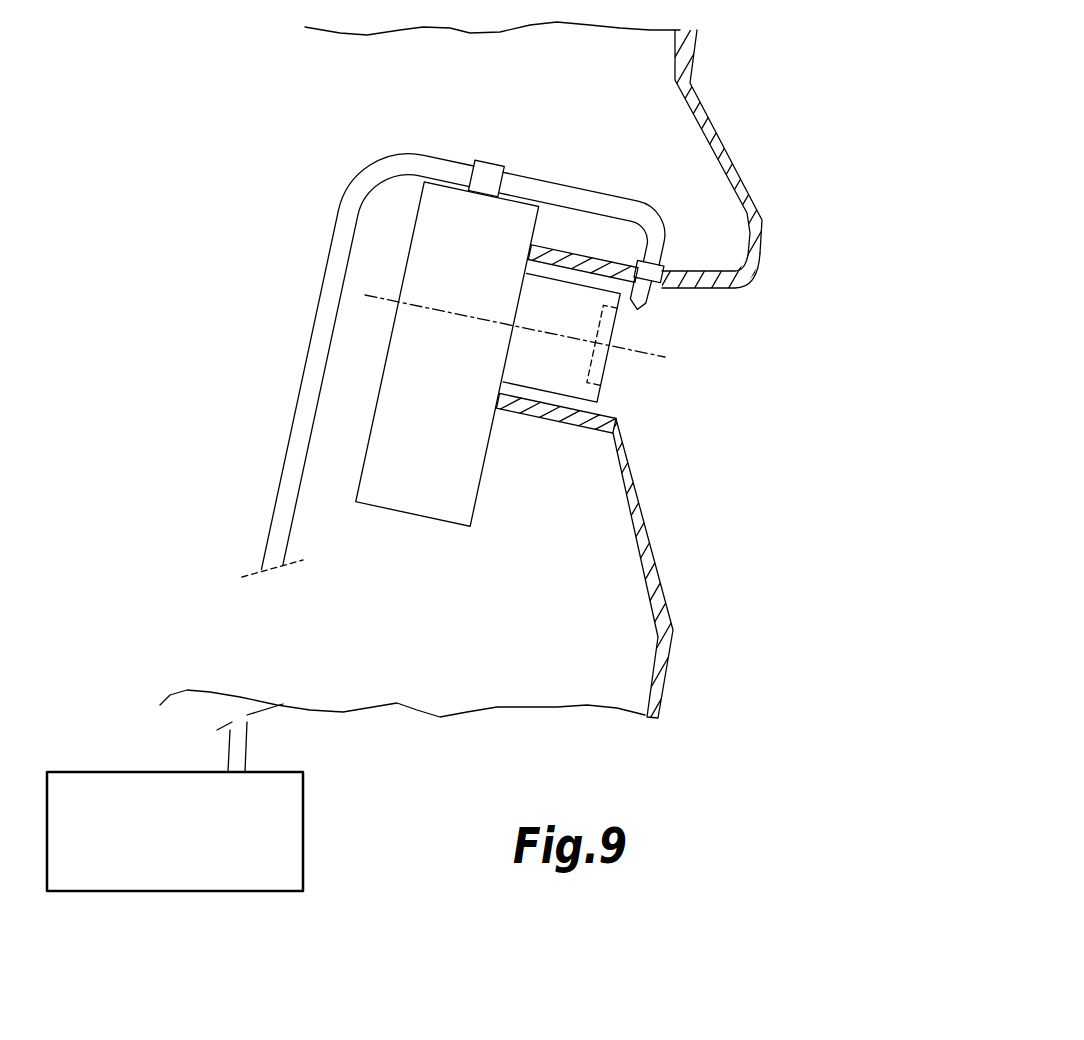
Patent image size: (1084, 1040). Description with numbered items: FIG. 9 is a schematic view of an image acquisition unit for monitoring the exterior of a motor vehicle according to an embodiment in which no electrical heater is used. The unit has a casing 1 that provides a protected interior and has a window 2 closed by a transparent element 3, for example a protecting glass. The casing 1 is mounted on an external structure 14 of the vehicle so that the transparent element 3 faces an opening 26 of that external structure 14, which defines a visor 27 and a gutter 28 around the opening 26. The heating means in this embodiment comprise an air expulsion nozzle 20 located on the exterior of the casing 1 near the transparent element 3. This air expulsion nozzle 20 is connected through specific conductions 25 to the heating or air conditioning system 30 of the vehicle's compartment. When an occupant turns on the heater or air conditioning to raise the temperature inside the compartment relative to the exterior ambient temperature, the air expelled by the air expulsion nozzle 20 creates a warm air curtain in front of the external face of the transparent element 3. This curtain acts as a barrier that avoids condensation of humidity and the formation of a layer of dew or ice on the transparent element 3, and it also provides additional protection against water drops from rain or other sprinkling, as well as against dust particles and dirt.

The casing 1 is at (422, 502).
The window 2 is at (628, 380).
The transparent element 3 is at (618, 367).
The external structure 14 is at (695, 110).
The air expulsion nozzle 20 is at (647, 297).
The conductions 25 is at (338, 240).
The opening 26 is at (640, 427).
The visor 27 is at (760, 237).
The gutter 28 is at (648, 542).
The heating or air conditioning system 30 is at (303, 813).